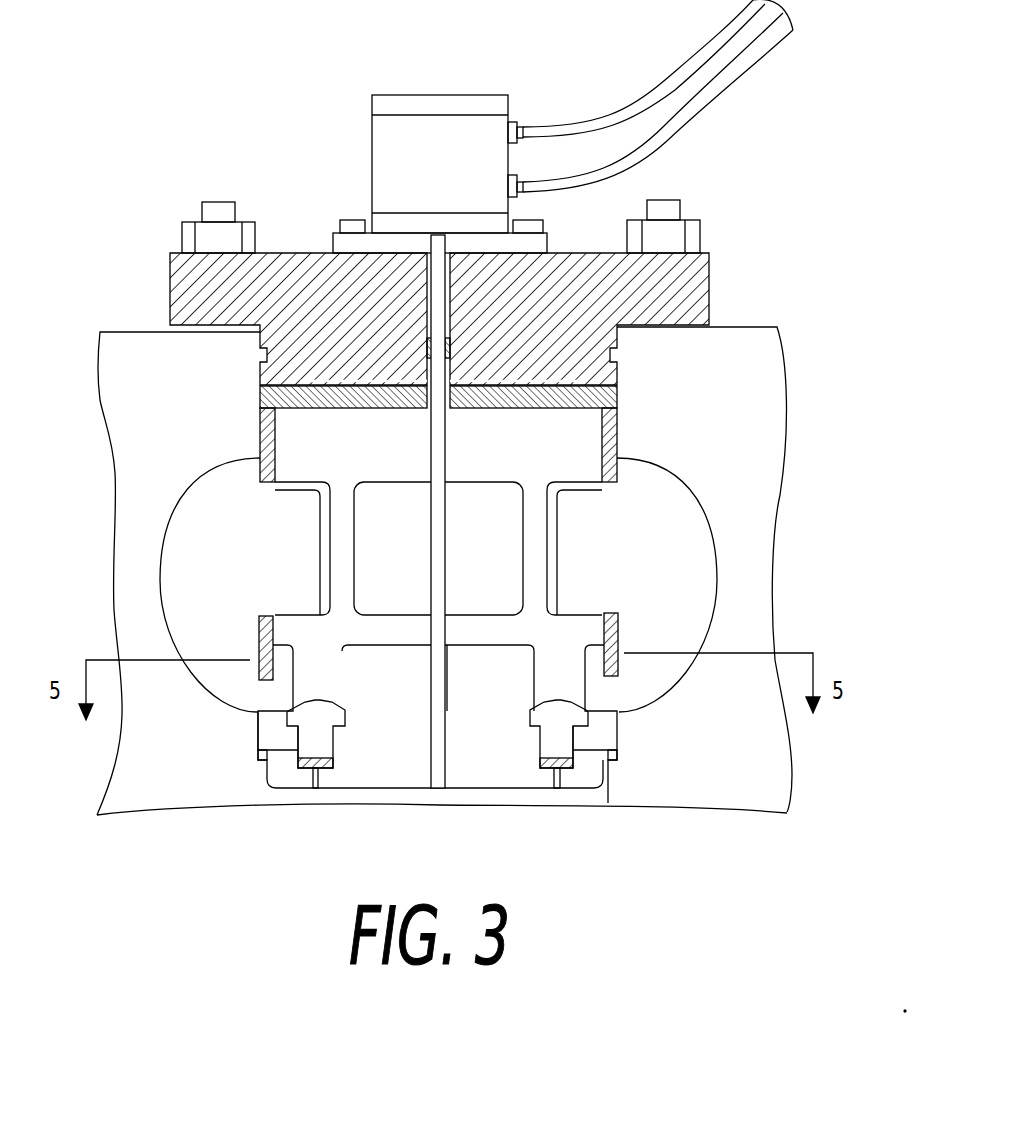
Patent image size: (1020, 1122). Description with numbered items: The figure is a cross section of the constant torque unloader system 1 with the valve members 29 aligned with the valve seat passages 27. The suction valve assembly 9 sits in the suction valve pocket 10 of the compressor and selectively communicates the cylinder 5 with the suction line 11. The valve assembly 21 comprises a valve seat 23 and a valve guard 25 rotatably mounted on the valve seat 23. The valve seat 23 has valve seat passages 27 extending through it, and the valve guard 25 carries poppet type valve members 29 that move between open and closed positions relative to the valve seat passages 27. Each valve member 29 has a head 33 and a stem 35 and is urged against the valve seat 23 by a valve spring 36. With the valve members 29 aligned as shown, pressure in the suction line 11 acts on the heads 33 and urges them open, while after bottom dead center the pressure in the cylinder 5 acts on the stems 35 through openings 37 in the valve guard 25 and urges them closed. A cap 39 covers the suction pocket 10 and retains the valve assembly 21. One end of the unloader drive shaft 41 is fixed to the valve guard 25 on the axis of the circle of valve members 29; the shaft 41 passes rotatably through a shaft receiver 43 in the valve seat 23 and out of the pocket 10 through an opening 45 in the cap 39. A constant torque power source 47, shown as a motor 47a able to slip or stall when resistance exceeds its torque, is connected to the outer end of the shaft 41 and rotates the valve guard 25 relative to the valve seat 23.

The constant torque unloader system 1 is at (772, 97).
The cylinder 5 is at (452, 850).
The suction valve assembly 9 is at (620, 752).
The suction valve pocket 10 is at (276, 435).
The suction line 11 is at (270, 551).
The valve assembly 21 is at (620, 727).
The valve seat 23 is at (256, 717).
The valve guard 25 is at (257, 743).
The valve seat passages 27 is at (340, 663).
The valve members 29 is at (334, 742).
The head 33 is at (323, 702).
The stem 35 is at (297, 749).
The valve spring 36 is at (333, 765).
The openings 37 is at (310, 778).
The cap 39 is at (712, 277).
The unloader drive shaft 41 is at (447, 511).
The shaft receiver 43 is at (446, 660).
The opening 45 is at (442, 253).
The constant torque power source 47 is at (368, 152).
The motor 47a is at (368, 182).